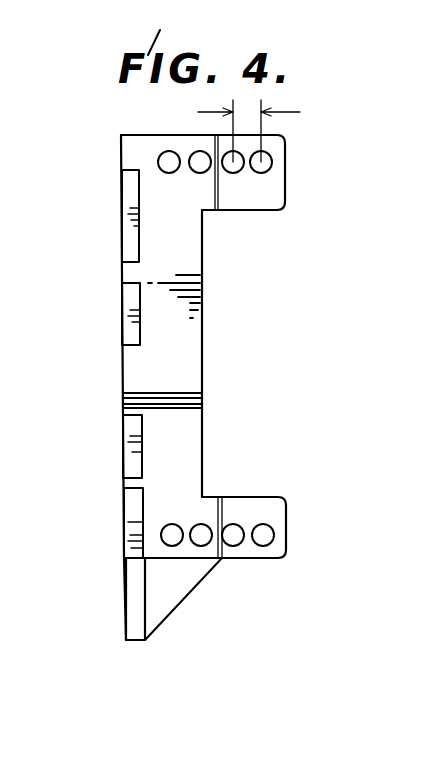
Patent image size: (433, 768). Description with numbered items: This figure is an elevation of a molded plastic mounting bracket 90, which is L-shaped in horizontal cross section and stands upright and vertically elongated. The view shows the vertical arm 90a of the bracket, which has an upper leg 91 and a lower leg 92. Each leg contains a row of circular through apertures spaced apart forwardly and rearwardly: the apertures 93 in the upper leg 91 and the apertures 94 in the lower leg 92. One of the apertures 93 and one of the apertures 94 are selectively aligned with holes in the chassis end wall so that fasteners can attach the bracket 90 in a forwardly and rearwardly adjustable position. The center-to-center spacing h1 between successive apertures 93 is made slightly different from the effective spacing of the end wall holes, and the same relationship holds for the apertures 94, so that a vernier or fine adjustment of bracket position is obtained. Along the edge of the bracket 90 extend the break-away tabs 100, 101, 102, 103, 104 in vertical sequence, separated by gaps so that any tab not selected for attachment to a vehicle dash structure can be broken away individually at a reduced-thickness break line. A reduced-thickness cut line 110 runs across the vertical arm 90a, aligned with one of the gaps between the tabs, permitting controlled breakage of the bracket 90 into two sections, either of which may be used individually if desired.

The mounting bracket 90 is at (110, 402).
The vertical arm 90a is at (187, 342).
The upper leg 91 is at (277, 182).
The lower leg 92 is at (275, 512).
The apertures 93 is at (206, 170).
The apertures 94 is at (203, 537).
The center-to-center spacing h1 is at (262, 129).
The tab 100 is at (125, 190).
The tab 101 is at (125, 302).
The tab 102 is at (125, 462).
The tab 103 is at (125, 513).
The tab 104 is at (133, 611).
The cut line 110 is at (178, 391).